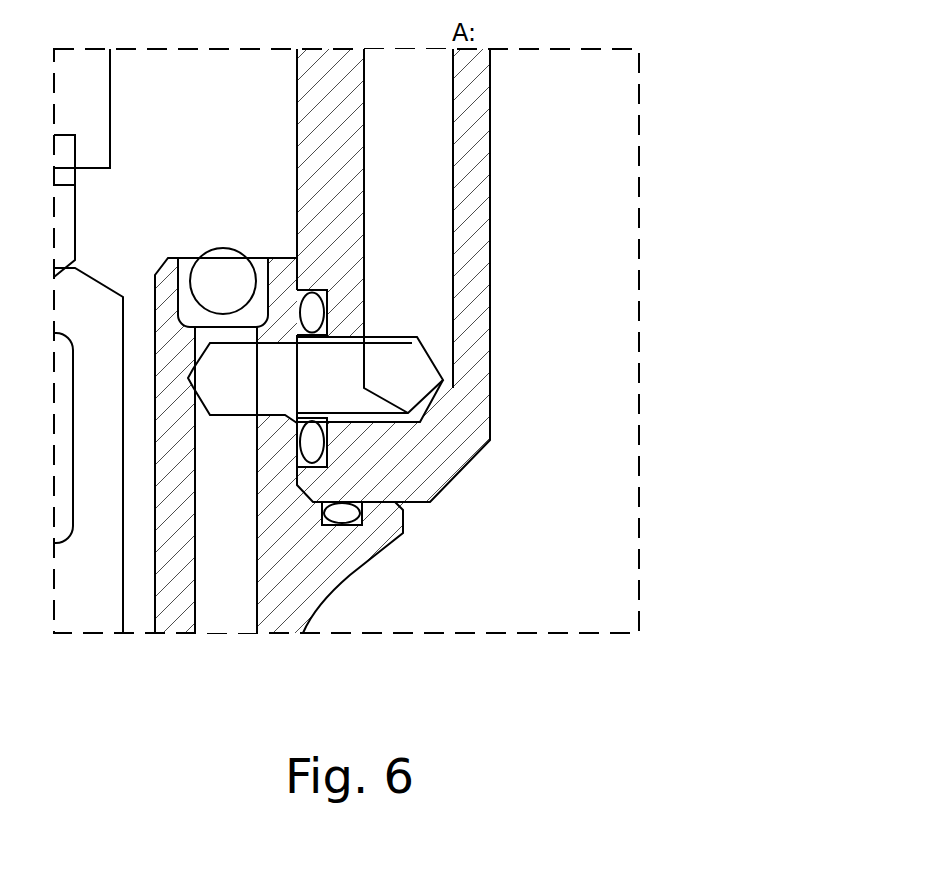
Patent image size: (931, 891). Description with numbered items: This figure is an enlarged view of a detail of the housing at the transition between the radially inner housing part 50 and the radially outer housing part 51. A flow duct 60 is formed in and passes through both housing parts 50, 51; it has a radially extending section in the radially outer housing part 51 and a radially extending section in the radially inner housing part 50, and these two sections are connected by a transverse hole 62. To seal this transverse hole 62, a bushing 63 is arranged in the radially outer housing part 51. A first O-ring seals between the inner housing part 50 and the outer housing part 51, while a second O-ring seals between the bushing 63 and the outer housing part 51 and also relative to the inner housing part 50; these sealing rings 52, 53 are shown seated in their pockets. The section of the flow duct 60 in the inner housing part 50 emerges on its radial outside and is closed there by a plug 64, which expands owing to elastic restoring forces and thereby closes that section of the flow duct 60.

The radially inner housing part 50 is at (348, 555).
The radially outer housing part 51 is at (473, 258).
The sealing ring 52 is at (343, 512).
The sealing ring 53 is at (310, 313).
The flow duct 60 is at (420, 135).
The transverse hole 62 is at (320, 395).
The bushing 63 is at (417, 337).
The plug 64 is at (223, 283).